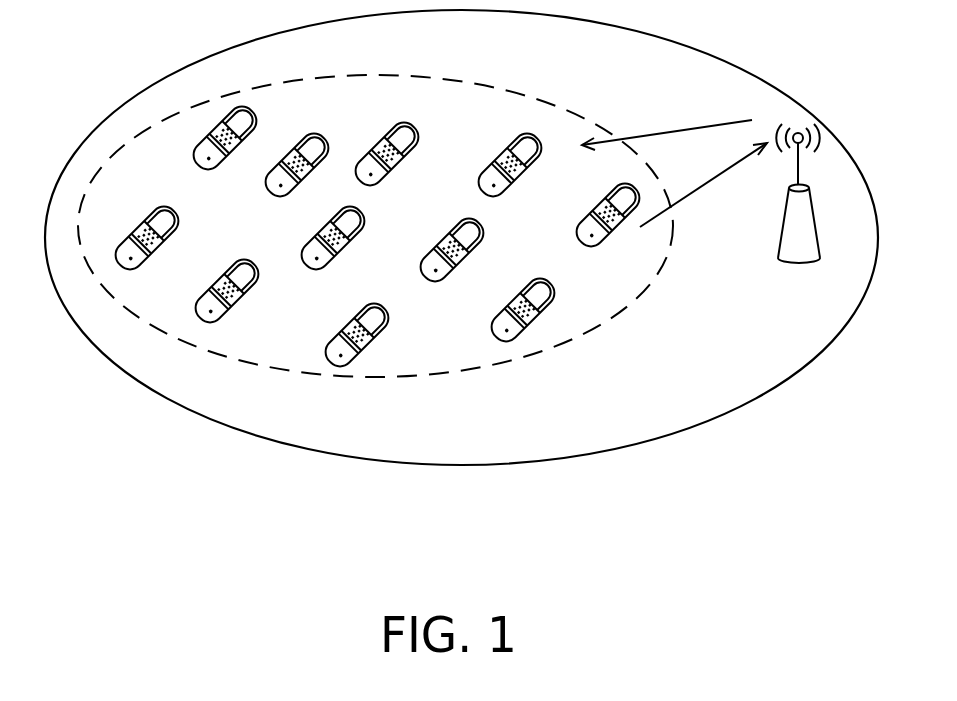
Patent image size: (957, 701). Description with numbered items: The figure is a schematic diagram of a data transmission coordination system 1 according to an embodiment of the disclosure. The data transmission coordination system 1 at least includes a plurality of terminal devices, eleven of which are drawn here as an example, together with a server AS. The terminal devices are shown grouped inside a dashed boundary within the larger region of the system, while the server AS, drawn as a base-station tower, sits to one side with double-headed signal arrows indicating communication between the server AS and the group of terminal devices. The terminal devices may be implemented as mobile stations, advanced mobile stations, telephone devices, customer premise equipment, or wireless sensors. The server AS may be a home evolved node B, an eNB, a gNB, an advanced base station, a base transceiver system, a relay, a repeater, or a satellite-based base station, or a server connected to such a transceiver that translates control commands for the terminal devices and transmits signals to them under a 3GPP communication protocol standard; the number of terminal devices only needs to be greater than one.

The data transmission coordination system 1 is at (860, 421).
The server AS is at (800, 263).